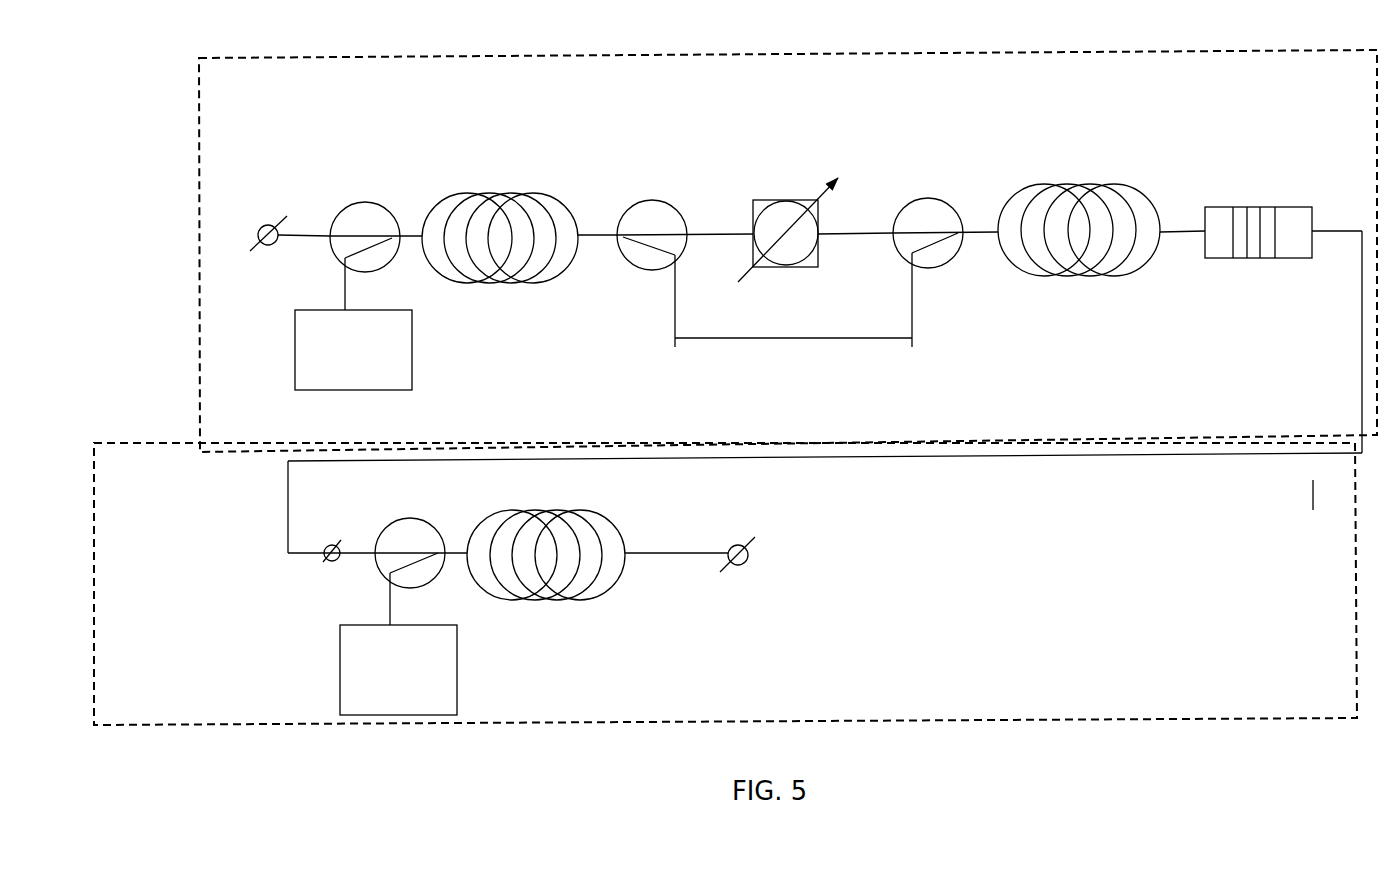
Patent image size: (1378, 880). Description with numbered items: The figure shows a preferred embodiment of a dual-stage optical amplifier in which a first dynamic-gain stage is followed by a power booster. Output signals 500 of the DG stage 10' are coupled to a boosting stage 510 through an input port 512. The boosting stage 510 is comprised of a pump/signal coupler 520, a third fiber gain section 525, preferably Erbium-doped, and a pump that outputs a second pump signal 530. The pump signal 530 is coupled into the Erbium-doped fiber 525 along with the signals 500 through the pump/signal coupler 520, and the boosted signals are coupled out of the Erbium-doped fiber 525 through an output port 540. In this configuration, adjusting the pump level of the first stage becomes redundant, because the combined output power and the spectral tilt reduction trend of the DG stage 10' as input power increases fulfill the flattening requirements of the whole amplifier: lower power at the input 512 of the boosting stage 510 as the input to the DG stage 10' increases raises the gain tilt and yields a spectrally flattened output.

The DG stage 10' is at (788, 251).
The output signals 500 is at (1360, 240).
The boosting stage 510 is at (725, 584).
The input port 512 is at (320, 585).
The pump/signal coupler 520 is at (405, 541).
The third fiber gain section 525 is at (597, 533).
The second pump signal 530 is at (398, 670).
The output port 540 is at (791, 553).